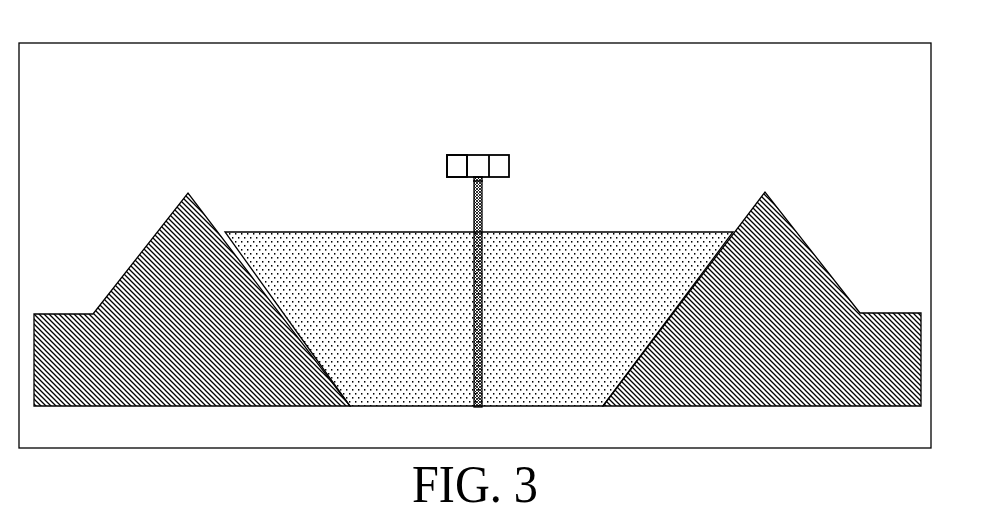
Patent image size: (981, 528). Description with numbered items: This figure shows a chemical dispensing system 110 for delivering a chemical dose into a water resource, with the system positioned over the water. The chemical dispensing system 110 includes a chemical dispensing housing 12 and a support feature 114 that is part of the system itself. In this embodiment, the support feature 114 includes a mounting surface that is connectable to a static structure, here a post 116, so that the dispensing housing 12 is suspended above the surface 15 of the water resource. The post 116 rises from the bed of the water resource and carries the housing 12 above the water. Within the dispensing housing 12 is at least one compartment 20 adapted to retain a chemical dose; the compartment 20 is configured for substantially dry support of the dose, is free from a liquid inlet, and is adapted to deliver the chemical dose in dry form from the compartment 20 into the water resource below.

The chemical dispensing system 110 is at (442, 134).
The chemical dispensing housing 12 is at (496, 156).
The compartment 20 is at (452, 168).
The support feature 114 is at (474, 179).
The post 116 is at (482, 211).
The surface 15 is at (305, 230).